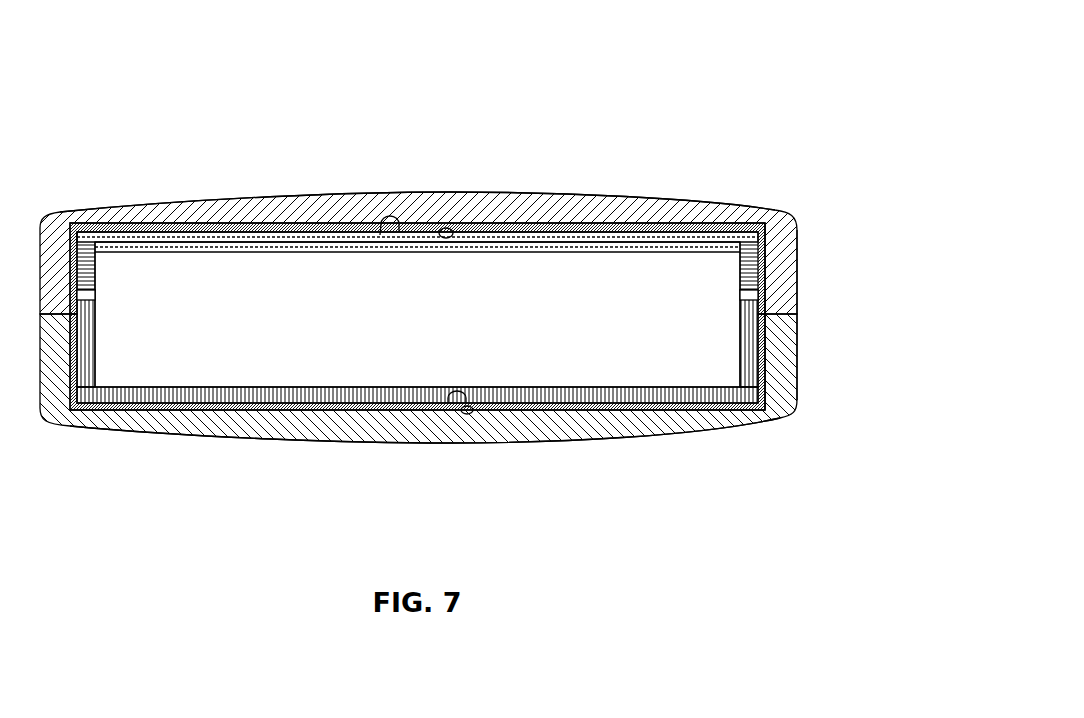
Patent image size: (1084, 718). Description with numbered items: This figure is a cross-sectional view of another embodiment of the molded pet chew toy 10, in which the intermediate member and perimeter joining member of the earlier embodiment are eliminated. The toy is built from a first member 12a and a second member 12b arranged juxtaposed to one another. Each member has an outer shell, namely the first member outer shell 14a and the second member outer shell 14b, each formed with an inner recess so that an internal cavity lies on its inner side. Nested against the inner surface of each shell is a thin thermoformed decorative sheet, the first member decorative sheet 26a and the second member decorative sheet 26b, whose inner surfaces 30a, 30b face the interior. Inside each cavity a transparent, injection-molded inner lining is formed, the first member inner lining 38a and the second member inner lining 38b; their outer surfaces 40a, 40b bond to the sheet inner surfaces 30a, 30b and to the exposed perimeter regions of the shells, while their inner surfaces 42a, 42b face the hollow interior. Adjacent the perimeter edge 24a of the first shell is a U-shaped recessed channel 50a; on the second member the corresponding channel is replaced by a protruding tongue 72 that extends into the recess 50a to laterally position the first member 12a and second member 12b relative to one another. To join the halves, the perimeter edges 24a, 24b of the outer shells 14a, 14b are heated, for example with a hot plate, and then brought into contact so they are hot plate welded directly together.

The molded pet chew toy 10 is at (155, 75).
The first member 12a is at (527, 117).
The second member 12b is at (307, 487).
The first member outer shell 14a is at (298, 200).
The second member outer shell 14b is at (262, 430).
The perimeter edge of first outer shell 24a is at (788, 296).
The perimeter edge of second outer shell 24b is at (788, 318).
The first member decorative sheet 26a is at (602, 230).
The second member decorative sheet 26b is at (551, 405).
The inner surface of first member decorative sheet 30a is at (446, 228).
The inner surface of second member decorative sheet 30b is at (467, 412).
The first member inner lining 38a is at (522, 238).
The second member inner lining 38b is at (320, 395).
The outer surface of first member inner lining 40a is at (380, 235).
The outer surface of second member inner lining 40b is at (390, 400).
The inner surface of first member inner lining 42a is at (303, 250).
The inner surface of second member inner lining 42b is at (520, 392).
The U-shaped recessed channel 50a is at (118, 305).
The protruding tongue 72 is at (80, 305).